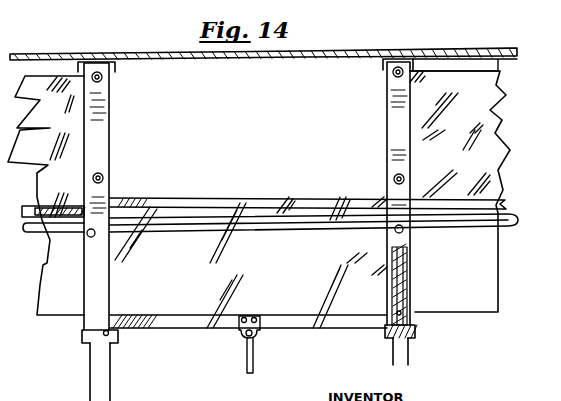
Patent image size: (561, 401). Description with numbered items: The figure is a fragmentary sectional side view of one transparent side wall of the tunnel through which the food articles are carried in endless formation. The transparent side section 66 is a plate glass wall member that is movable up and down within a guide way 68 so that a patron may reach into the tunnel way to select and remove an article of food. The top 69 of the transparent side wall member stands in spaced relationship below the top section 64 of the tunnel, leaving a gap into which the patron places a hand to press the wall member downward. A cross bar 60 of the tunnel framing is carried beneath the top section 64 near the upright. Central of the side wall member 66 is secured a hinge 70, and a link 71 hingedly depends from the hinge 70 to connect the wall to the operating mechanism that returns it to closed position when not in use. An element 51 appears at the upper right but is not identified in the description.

The panel board 51 is at (448, 63).
The cross bar 60 is at (413, 50).
The top section 64 is at (304, 53).
The side section 66 is at (88, 133).
The guide way 68 is at (103, 155).
The top of transparent side wall member 69 is at (436, 64).
The hinge 70 is at (240, 331).
The link 71 is at (255, 352).